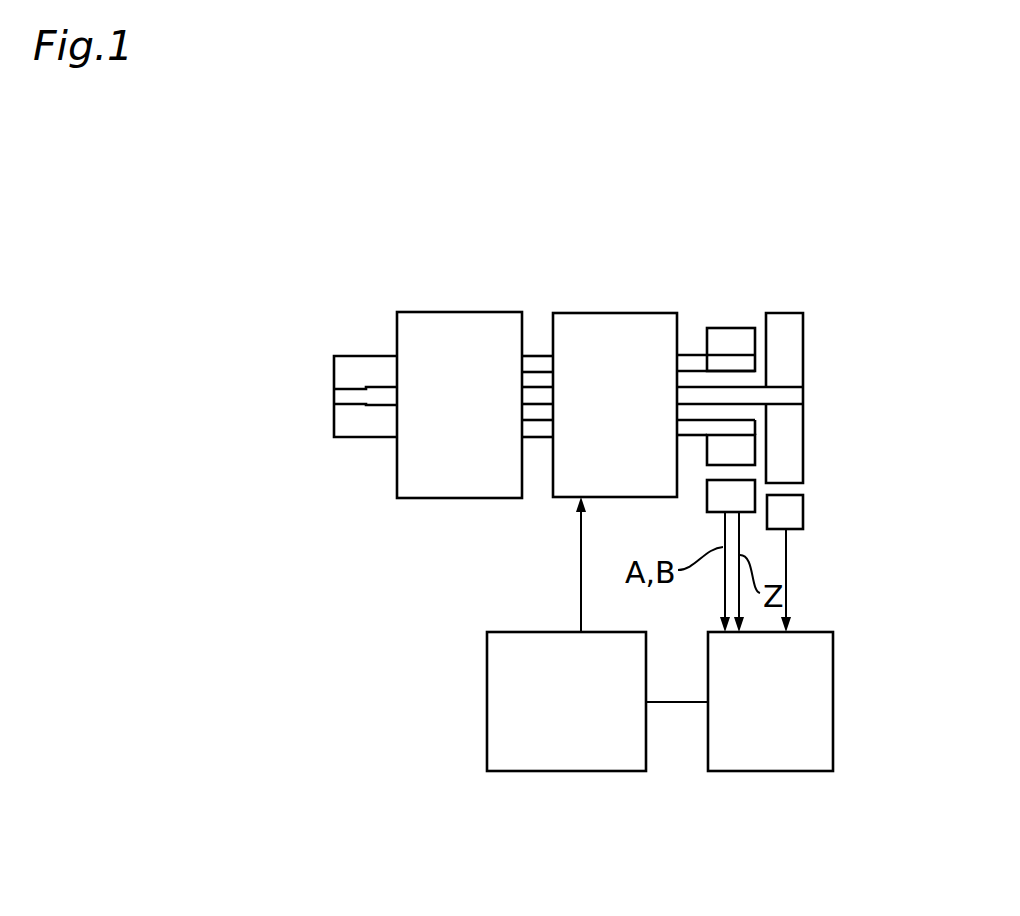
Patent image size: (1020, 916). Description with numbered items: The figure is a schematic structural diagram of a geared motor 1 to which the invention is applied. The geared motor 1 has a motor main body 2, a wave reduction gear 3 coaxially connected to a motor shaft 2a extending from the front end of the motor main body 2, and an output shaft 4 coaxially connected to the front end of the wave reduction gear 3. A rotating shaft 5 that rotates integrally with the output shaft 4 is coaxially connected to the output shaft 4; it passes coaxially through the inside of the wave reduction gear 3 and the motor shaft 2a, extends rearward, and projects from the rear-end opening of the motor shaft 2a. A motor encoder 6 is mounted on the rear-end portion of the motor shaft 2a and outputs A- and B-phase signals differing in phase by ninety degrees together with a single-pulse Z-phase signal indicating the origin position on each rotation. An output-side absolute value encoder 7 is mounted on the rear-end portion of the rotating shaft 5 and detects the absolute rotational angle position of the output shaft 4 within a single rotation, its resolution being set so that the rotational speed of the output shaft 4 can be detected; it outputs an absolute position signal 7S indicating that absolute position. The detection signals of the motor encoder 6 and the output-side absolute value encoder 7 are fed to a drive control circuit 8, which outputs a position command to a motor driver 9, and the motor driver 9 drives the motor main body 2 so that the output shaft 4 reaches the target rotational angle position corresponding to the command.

The geared motor 1 is at (820, 278).
The motor main body 2 is at (585, 311).
The motor shaft 2a is at (538, 358).
The wave reduction gear 3 is at (456, 311).
The output shaft 4 is at (352, 365).
The rotating shaft 5 is at (728, 397).
The motor encoder 6 is at (703, 452).
The output-side absolute value encoder 7 is at (813, 452).
The absolute position signal 7S is at (786, 563).
The drive control circuit 8 is at (833, 690).
The motor driver 9 is at (487, 674).